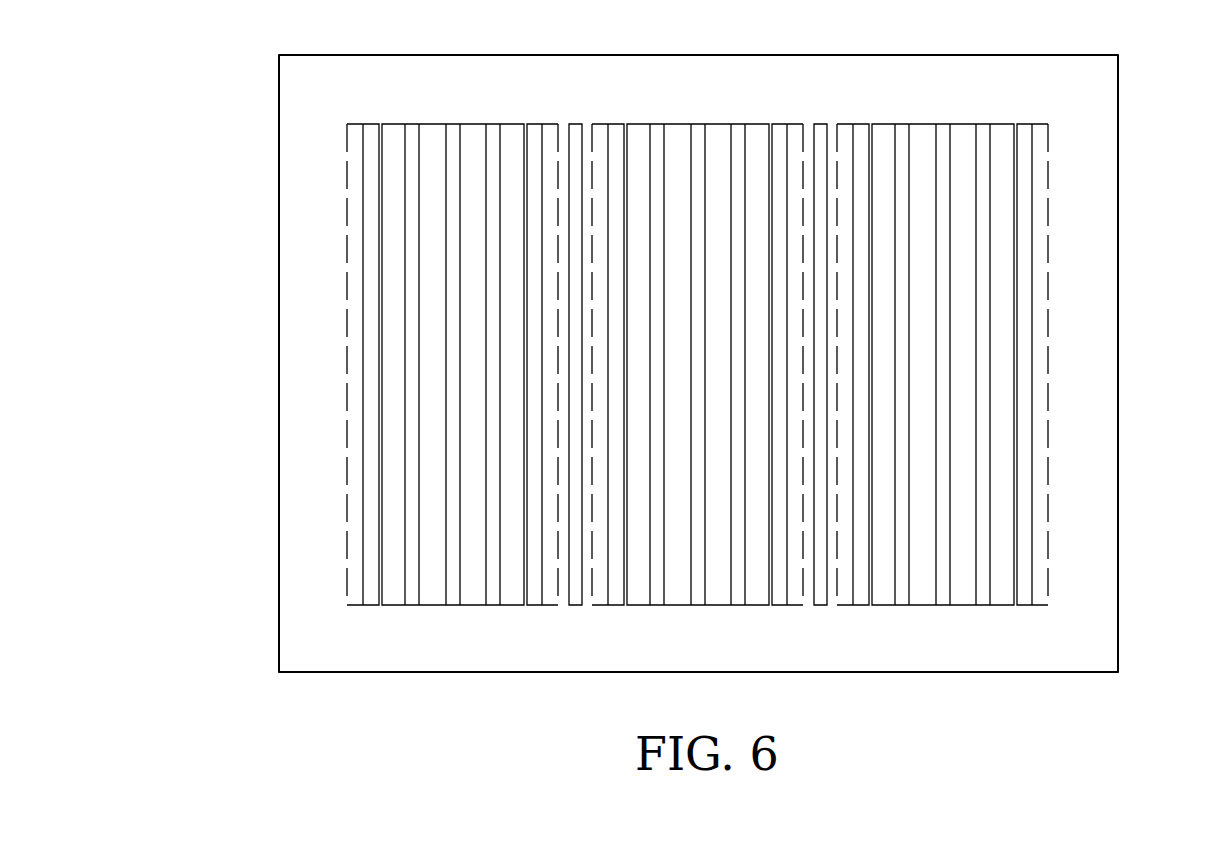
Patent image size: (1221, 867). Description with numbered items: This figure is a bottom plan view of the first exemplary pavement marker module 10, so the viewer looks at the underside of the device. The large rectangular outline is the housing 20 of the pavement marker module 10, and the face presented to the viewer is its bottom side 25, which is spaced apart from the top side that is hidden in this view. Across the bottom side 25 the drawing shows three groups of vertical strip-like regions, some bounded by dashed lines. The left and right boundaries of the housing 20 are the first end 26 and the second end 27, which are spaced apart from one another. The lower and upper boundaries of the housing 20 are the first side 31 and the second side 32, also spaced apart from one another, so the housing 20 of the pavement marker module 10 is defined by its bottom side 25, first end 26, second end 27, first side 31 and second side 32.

The pavement marker module 10 is at (212, 135).
The housing 20 is at (1118, 187).
The bottom side 25 is at (1068, 474).
The first end 26 is at (279, 364).
The second end 27 is at (1118, 364).
The first side 31 is at (700, 672).
The second side 32 is at (700, 55).